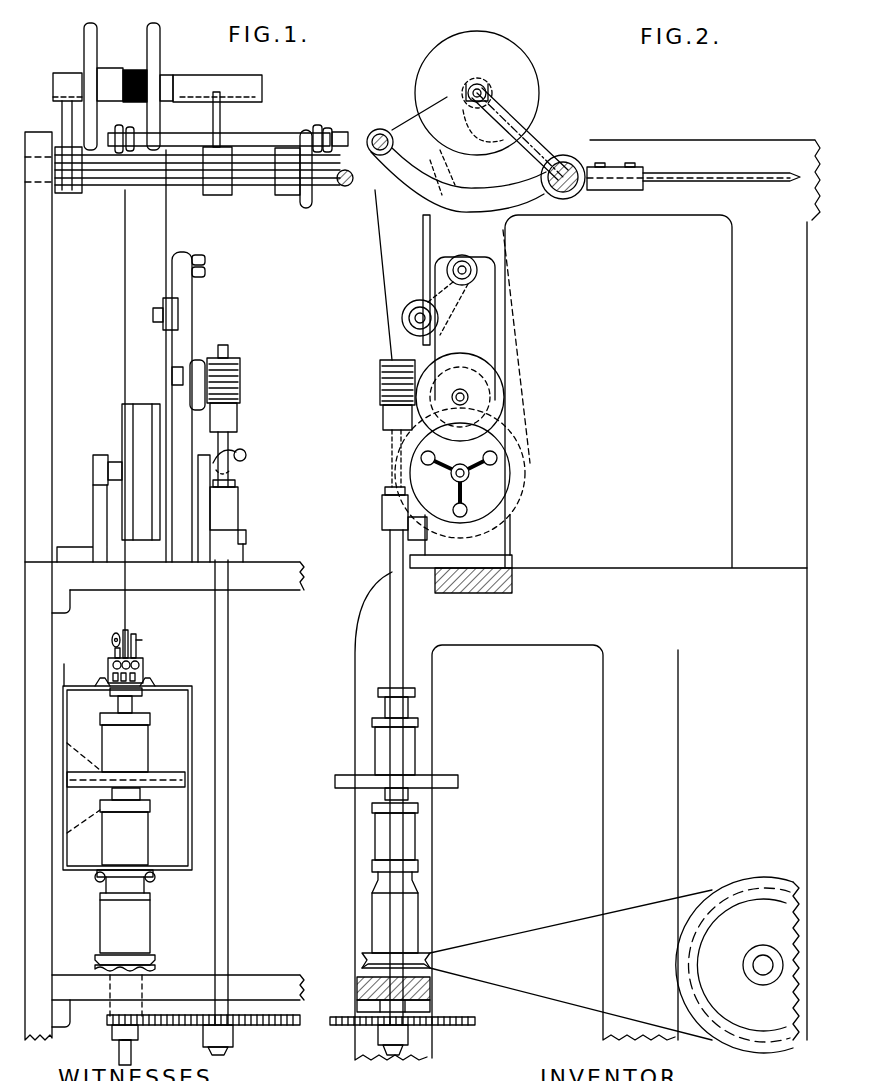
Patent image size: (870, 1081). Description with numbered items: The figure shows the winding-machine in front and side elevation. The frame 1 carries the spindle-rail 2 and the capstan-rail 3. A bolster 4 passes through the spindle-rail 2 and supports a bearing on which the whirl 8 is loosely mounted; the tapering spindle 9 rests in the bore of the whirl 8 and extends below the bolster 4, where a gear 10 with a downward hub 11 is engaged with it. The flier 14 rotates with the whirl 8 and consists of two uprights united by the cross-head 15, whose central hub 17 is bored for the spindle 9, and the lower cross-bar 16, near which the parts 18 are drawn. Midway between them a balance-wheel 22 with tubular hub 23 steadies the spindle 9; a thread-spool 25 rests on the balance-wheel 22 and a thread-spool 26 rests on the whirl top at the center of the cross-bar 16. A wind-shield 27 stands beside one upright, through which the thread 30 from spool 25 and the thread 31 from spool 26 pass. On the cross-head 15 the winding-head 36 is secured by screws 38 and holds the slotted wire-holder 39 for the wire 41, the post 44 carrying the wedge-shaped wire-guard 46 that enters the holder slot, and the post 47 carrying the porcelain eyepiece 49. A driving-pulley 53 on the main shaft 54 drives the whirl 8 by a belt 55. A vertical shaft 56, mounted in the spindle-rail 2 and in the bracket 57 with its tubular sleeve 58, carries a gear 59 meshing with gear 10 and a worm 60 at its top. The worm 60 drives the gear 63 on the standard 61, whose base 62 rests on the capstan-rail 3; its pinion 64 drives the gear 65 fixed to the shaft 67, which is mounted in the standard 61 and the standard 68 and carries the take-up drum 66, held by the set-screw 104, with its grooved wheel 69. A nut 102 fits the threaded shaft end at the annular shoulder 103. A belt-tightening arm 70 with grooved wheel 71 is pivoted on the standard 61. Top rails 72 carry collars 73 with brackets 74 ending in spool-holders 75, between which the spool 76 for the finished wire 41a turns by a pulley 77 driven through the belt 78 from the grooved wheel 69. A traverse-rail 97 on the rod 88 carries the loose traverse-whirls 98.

In FIG. 2, the frame 1 is at (372, 673).
In FIG. 1, the spindle-rail 2 is at (302, 992).
In FIG. 2, the spindle-rail 2 is at (355, 990).
In FIG. 1, the capstan-rail 3 is at (302, 580).
In FIG. 2, the capstan-rail 3 is at (514, 580).
In FIG. 1, the bolster 4 is at (142, 968).
In FIG. 2, the bolster 4 is at (360, 972).
In FIG. 1, the whirl 8 is at (151, 930).
In FIG. 2, the whirl 8 is at (371, 933).
In FIG. 1, the spindle 9 is at (133, 708).
In FIG. 1, the gear 10 is at (110, 1030).
In FIG. 1, the hub 11 is at (139, 1035).
In FIG. 1, the flier 14 is at (68, 718).
In FIG. 1, the cross-head 15 is at (180, 686).
In FIG. 2, the cross-head 15 is at (417, 692).
In FIG. 1, the lower cross-bar 16 is at (176, 875).
In FIG. 2, the lower cross-bar 16 is at (420, 867).
In FIG. 1, the central hub 17 is at (109, 692).
In FIG. 1, the contact rings 18 is at (95, 878).
In FIG. 1, the balance-wheel 22 is at (168, 784).
In FIG. 2, the balance-wheel 22 is at (460, 782).
In FIG. 1, the tubular hub 23 is at (111, 795).
In FIG. 2, the tubular hub 23 is at (410, 795).
In FIG. 1, the thread-spool 25 is at (151, 720).
In FIG. 2, the thread-spool 25 is at (420, 722).
In FIG. 1, the thread-spool 26 is at (151, 808).
In FIG. 2, the thread-spool 26 is at (371, 808).
In FIG. 1, the wind-shield 27 is at (62, 762).
In FIG. 1, the thread 30 is at (76, 756).
In FIG. 1, the thread 31 is at (80, 833).
In FIG. 1, the winding-head 36 is at (144, 661).
In FIG. 1, the screws 38 is at (98, 680).
In FIG. 1, the wire-holder 39 is at (129, 631).
In FIG. 1, the wire 41 is at (123, 603).
In FIG. 1, the finished wire 41a is at (123, 374).
In FIG. 2, the finished wire 41a is at (373, 264).
In FIG. 1, the adjustable post 44 is at (137, 636).
In FIG. 1, the wire-guard 46 is at (143, 640).
In FIG. 1, the adjustable post 47 is at (114, 653).
In FIG. 1, the porcelain eyepiece 49 is at (112, 638).
In FIG. 2, the driving-pulley 53 is at (746, 965).
In FIG. 2, the main shaft 54 is at (760, 970).
In FIG. 2, the belt 55 is at (580, 918).
In FIG. 1, the vertical shaft 56 is at (229, 674).
In FIG. 2, the vertical shaft 56 is at (405, 625).
In FIG. 1, the bracket 57 is at (247, 540).
In FIG. 2, the bracket 57 is at (422, 538).
In FIG. 1, the tubular sleeve 58 is at (240, 512).
In FIG. 2, the tubular sleeve 58 is at (380, 515).
In FIG. 1, the gear 59 is at (280, 1027).
In FIG. 2, the gear 59 is at (402, 1036).
In FIG. 1, the worm 60 is at (241, 380).
In FIG. 2, the worm 60 is at (379, 383).
In FIG. 1, the standard 61 is at (193, 327).
In FIG. 2, the standard 61 is at (478, 323).
In FIG. 1, the base 62 is at (198, 560).
In FIG. 2, the gear 63 is at (506, 400).
In FIG. 2, the pinion 64 is at (492, 386).
In FIG. 2, the gear 65 is at (512, 480).
In FIG. 1, the take-up drum 66 is at (145, 403).
In FIG. 2, the take-up drum 66 is at (514, 512).
In FIG. 1, the shaft 67 is at (92, 468).
In FIG. 2, the shaft 67 is at (468, 479).
In FIG. 1, the standard 68 is at (92, 513).
In FIG. 1, the grooved wheel 69 is at (164, 542).
In FIG. 2, the grooved wheel 69 is at (531, 500).
In FIG. 1, the belt-tightening arm 70 is at (180, 306).
In FIG. 2, the belt-tightening arm 70 is at (436, 296).
In FIG. 1, the grooved wheel 71 is at (163, 330).
In FIG. 2, the grooved wheel 71 is at (401, 320).
In FIG. 1, the top rails 72 is at (253, 188).
In FIG. 2, the top rails 72 is at (582, 170).
In FIG. 1, the collars 73 is at (68, 195).
In FIG. 2, the collars 73 is at (572, 154).
In FIG. 1, the bracket 74 is at (61, 120).
In FIG. 2, the bracket 74 is at (520, 118).
In FIG. 1, the spool-holder 75 is at (52, 92).
In FIG. 2, the spool-holder 75 is at (490, 91).
In FIG. 1, the spool 76 is at (161, 46).
In FIG. 2, the spool 76 is at (540, 70).
In FIG. 1, the pulley 77 is at (168, 78).
In FIG. 2, the pulley 77 is at (482, 82).
In FIG. 1, the belt 78 is at (165, 228).
In FIG. 2, the belt 78 is at (432, 229).
In FIG. 1, the rod 88 is at (289, 197).
In FIG. 2, the rod 88 is at (410, 182).
In FIG. 1, the traverse-rail 97 is at (283, 132).
In FIG. 1, the traverse-whirls 98 is at (122, 126).
In FIG. 2, the traverse-whirls 98 is at (371, 128).
In FIG. 1, the nut 102 is at (244, 460).
In FIG. 2, the nut 102 is at (428, 468).
In FIG. 1, the annular shoulder 103 is at (228, 458).
In FIG. 1, the set-screw 104 is at (150, 497).